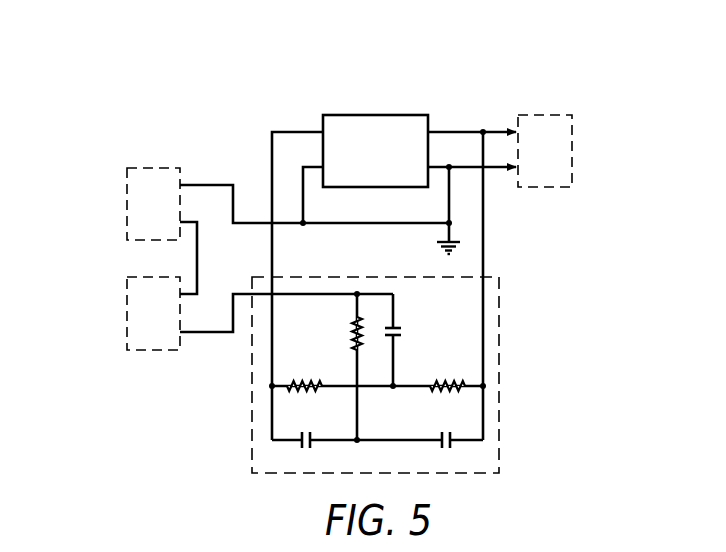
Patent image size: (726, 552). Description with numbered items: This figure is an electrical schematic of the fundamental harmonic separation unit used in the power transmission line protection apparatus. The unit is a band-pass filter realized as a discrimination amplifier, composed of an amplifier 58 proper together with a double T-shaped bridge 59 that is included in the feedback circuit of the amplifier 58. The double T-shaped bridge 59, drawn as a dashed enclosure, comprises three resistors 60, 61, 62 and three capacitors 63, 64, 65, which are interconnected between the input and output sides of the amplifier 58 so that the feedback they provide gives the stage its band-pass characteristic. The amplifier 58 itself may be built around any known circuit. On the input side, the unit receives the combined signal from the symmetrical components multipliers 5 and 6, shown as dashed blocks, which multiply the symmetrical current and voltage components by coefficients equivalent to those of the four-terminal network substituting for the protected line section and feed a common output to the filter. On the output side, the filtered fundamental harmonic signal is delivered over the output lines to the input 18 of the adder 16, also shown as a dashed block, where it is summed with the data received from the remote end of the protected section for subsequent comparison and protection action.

The symmetrical components multiplier 5 is at (160, 167).
The symmetrical components multiplier 6 is at (162, 353).
The adder 16 is at (545, 112).
The input of the adder 18 is at (514, 124).
The amplifier 58 is at (388, 113).
The double T-shaped bridge 59 is at (501, 385).
The resistor 60 is at (305, 381).
The resistor 61 is at (447, 381).
The resistor 62 is at (352, 331).
The capacitor 63 is at (306, 430).
The capacitor 64 is at (446, 430).
The capacitor 65 is at (403, 332).